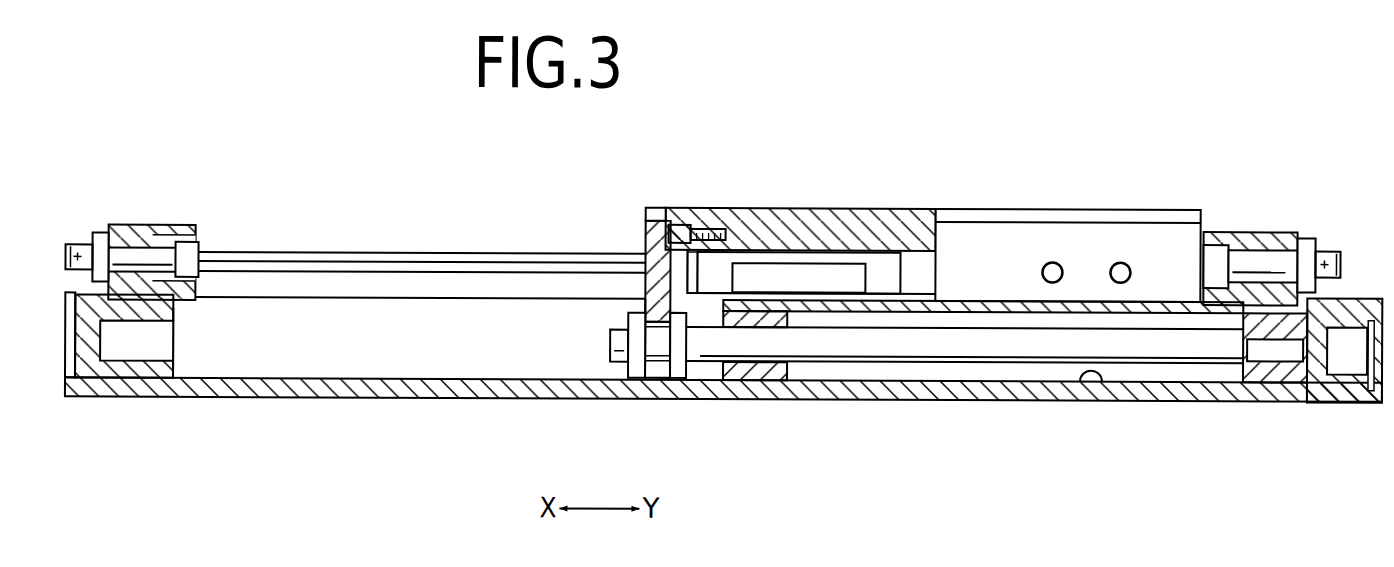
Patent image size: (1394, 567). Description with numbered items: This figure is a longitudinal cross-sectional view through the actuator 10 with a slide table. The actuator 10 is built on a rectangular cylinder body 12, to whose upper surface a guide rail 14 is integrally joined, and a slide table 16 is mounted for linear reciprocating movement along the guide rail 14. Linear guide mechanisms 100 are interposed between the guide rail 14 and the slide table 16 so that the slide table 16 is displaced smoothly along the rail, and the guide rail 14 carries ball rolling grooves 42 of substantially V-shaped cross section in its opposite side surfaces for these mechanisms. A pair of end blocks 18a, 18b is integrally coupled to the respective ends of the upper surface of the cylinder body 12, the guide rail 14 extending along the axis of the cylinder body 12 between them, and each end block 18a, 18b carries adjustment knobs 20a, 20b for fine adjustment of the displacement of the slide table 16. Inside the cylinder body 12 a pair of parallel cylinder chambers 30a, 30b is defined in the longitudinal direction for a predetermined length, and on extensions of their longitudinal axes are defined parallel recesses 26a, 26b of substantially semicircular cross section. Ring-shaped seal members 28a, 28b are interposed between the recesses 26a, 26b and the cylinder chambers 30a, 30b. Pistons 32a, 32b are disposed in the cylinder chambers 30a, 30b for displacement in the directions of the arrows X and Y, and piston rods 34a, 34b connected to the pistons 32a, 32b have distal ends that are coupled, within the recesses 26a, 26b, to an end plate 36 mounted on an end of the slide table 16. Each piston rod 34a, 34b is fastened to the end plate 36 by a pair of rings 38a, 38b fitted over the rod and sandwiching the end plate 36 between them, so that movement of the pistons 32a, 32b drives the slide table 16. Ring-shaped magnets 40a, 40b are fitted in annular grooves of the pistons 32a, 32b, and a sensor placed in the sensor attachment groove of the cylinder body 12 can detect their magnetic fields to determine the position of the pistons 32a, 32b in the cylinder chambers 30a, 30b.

The actuator 10 is at (985, 109).
The cylinder body 12 is at (1015, 403).
The guide rail 14 is at (455, 256).
The slide table 16 is at (923, 218).
The end block 18a is at (130, 229).
The end block 18b is at (1260, 230).
The adjustment knob 20a is at (78, 250).
The adjustment knob 20b is at (1333, 247).
The recess 26a is at (409, 382).
The recess 26b is at (375, 361).
The seal member 28a is at (797, 397).
The seal member 28b is at (757, 380).
The cylinder chamber 30a is at (983, 400).
The cylinder chamber 30b is at (1088, 375).
The piston 32a is at (1316, 393).
The piston 32b is at (1301, 395).
The piston rod 34a is at (964, 415).
The piston rod 34b is at (893, 347).
The end plate 36 is at (647, 253).
The ring 38a is at (633, 378).
The ring 38b is at (682, 378).
The magnet 40a is at (1288, 406).
The magnet 40b is at (1265, 398).
The ball rolling groove 42 is at (256, 270).
The linear guide mechanism 100 is at (795, 257).